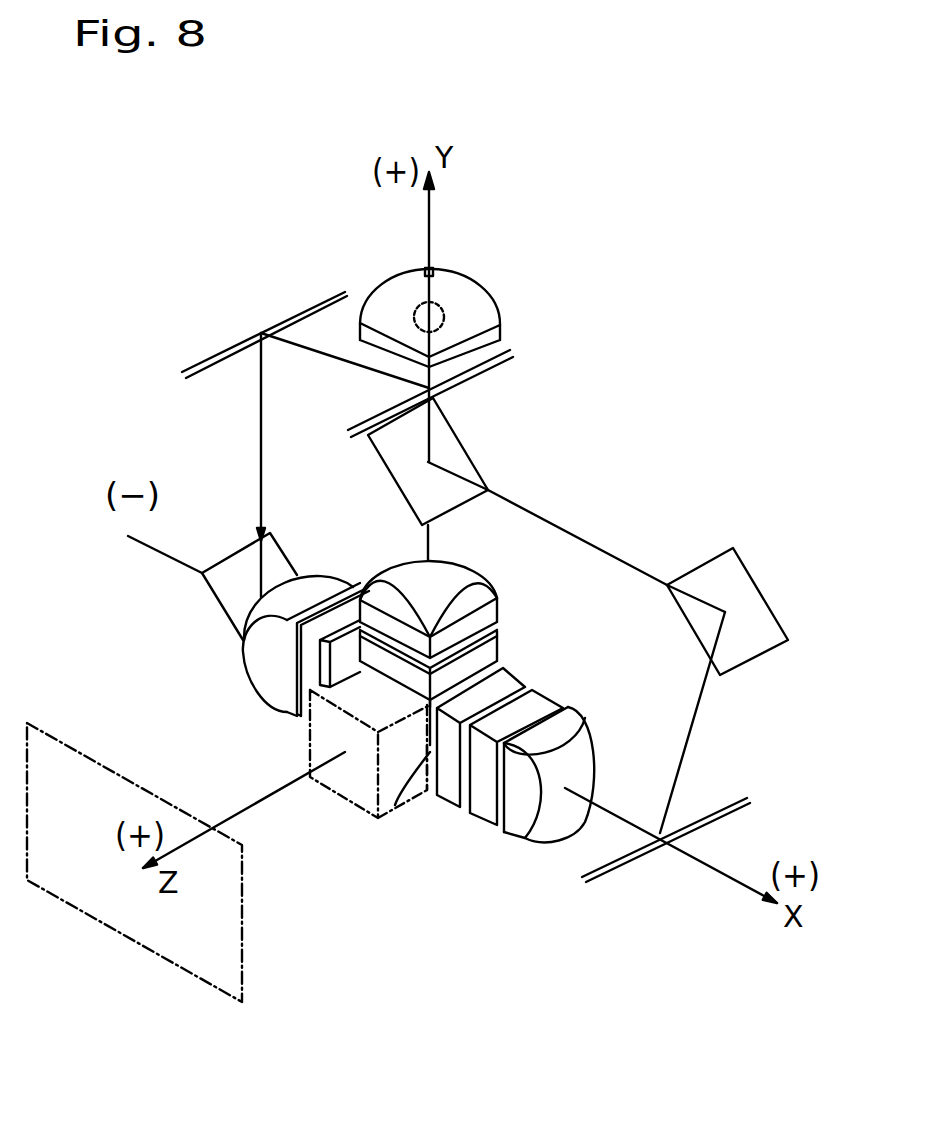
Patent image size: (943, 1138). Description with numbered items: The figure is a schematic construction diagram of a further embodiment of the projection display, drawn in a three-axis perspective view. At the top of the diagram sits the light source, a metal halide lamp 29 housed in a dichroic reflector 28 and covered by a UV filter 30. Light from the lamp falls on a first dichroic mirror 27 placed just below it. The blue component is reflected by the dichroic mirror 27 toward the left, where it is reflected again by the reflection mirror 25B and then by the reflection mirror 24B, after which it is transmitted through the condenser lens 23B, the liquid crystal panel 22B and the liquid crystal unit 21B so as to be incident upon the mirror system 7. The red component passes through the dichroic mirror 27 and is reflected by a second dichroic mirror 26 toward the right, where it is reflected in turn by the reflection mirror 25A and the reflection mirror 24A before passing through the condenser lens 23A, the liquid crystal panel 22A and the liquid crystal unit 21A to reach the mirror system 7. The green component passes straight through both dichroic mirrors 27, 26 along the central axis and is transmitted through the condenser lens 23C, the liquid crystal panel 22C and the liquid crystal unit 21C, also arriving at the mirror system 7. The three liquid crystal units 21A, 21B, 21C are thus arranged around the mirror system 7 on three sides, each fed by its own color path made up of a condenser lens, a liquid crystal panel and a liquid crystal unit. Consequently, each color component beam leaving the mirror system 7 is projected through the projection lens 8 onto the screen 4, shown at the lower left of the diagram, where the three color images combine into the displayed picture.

The screen 4 is at (242, 977).
The mirror system 7 is at (395, 805).
The projection lens 8 is at (315, 780).
The liquid crystal unit 21A is at (445, 788).
The liquid crystal unit 21B is at (323, 663).
The liquid crystal unit 21C is at (490, 662).
The liquid crystal panel 22A is at (480, 815).
The liquid crystal panel 22B is at (293, 678).
The liquid crystal panel 22C is at (497, 625).
The condenser lens 23A is at (525, 838).
The condenser lens 23B is at (250, 652).
The condenser lens 23C is at (480, 593).
The reflection mirror 24A is at (720, 810).
The reflection mirror 24B is at (245, 550).
The reflection mirror 25A is at (718, 550).
The reflection mirror 25B is at (217, 348).
The dichroic mirror 26 is at (472, 455).
The dichroic mirror 27 is at (477, 373).
The dichroic reflector 28 is at (434, 272).
The metal halide lamp 29 is at (442, 311).
The UV filter 30 is at (492, 337).